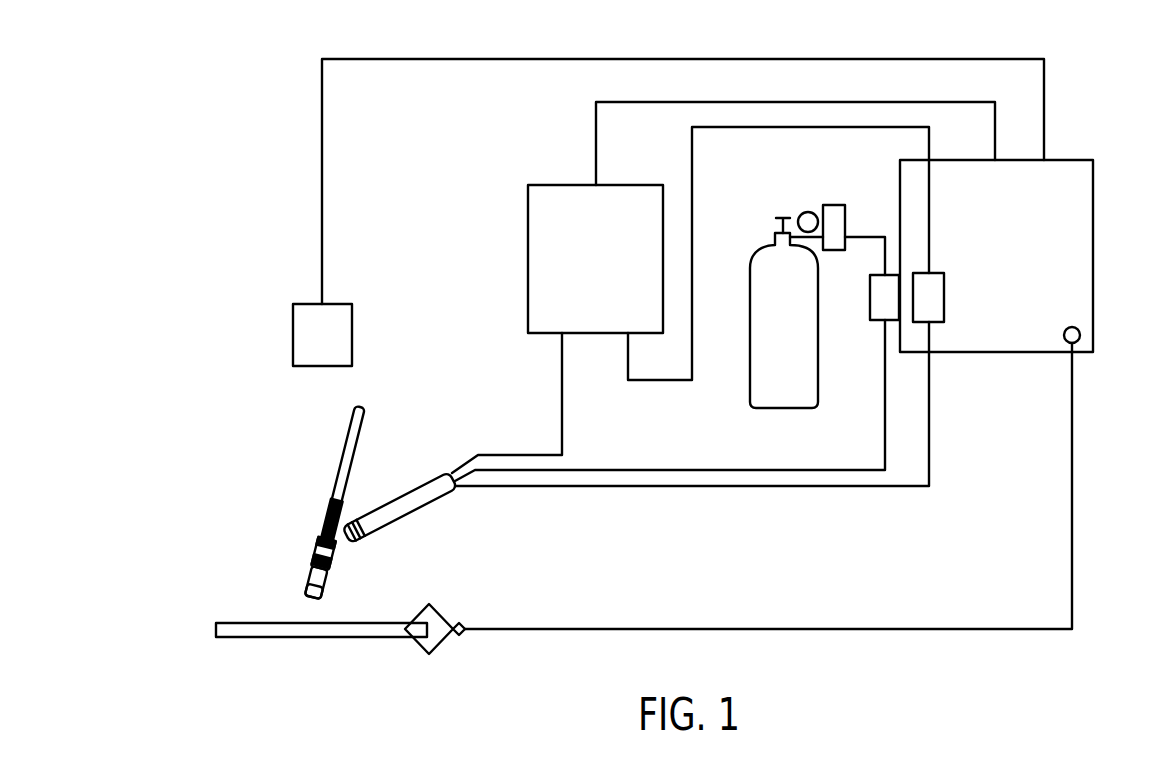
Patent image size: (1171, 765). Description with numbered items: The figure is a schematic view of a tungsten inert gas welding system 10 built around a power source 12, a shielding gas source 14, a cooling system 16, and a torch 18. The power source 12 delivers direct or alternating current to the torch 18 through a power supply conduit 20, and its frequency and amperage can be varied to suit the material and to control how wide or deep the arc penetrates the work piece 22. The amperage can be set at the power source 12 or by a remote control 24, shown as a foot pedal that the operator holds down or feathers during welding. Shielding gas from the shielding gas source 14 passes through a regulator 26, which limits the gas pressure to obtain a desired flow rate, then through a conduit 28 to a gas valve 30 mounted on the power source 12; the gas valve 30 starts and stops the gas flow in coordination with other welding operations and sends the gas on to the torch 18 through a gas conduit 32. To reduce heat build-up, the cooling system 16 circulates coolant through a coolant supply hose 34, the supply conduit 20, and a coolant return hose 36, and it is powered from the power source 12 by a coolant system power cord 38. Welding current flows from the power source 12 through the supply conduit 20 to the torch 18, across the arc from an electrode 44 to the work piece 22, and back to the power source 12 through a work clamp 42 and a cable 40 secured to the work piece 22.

The TIG welding system 10 is at (238, 74).
The power source 12 is at (984, 271).
The shielding gas source 14 is at (770, 351).
The cooling system 16 is at (583, 275).
The torch 18 is at (408, 434).
The power supply conduit 20 is at (705, 487).
The work piece 22 is at (318, 638).
The remote control 24 is at (309, 350).
The regulator 26 is at (810, 212).
The conduit 28 is at (861, 235).
The gas valve 30 is at (869, 298).
The gas conduit 32 is at (683, 470).
The coolant supply hose 34 is at (561, 392).
The coolant return hose 36 is at (660, 381).
The coolant system power cord 38 is at (793, 101).
The cable 40 is at (768, 628).
The work clamp 42 is at (440, 646).
The electrode 44 is at (309, 598).